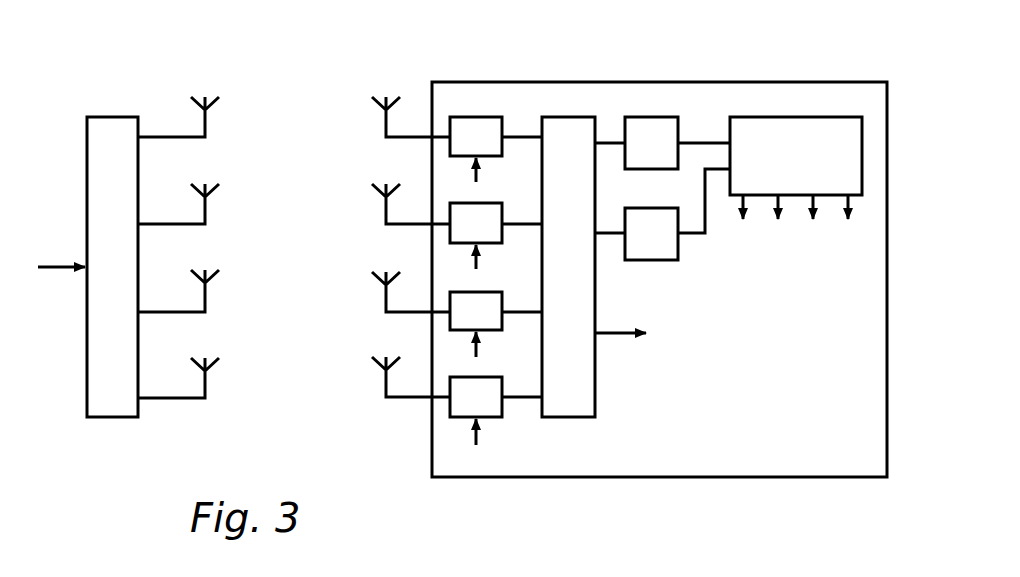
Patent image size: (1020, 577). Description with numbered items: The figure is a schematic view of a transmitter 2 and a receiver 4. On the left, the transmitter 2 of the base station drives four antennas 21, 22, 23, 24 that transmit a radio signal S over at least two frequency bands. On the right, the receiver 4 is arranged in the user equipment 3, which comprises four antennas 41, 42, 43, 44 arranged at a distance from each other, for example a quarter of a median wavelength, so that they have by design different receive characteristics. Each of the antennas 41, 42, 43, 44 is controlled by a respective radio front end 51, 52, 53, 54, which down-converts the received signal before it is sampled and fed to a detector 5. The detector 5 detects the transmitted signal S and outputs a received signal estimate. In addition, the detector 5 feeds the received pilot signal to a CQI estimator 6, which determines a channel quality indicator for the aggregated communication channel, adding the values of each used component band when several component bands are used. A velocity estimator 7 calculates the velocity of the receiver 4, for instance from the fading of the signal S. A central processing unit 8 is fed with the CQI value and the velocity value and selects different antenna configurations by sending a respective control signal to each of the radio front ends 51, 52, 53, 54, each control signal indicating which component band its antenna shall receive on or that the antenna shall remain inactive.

The transmitter 2 is at (264, 379).
The antenna 21 is at (208, 122).
The antenna 22 is at (208, 208).
The antenna 23 is at (208, 294).
The antenna 24 is at (208, 384).
The user equipment 3 is at (533, 498).
The receiver 4 is at (734, 456).
The antenna 41 is at (381, 108).
The antenna 42 is at (381, 195).
The antenna 43 is at (381, 283).
The antenna 44 is at (381, 368).
The detector 5 is at (594, 267).
The radio front end 51 is at (496, 157).
The radio front end 52 is at (496, 243).
The radio front end 53 is at (496, 332).
The radio front end 54 is at (496, 418).
The CQI estimator 6 is at (662, 143).
The velocity estimator 7 is at (662, 214).
The central processing unit 8 is at (796, 187).